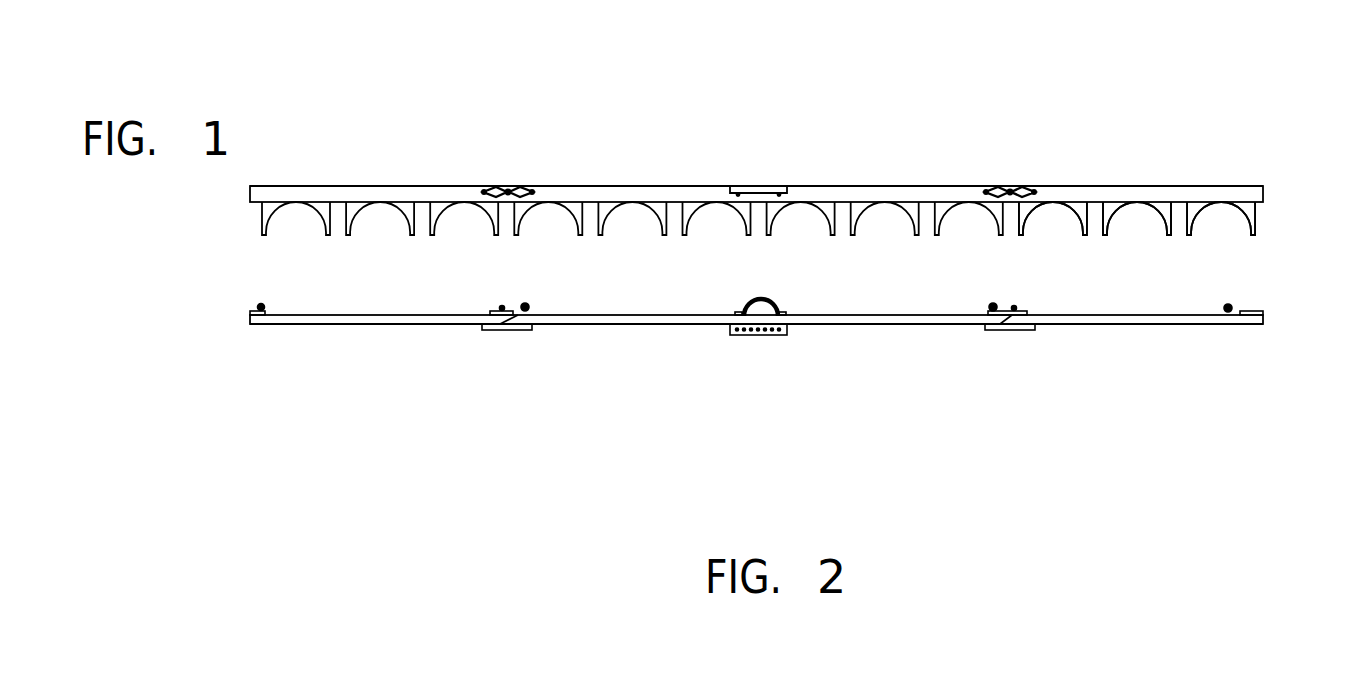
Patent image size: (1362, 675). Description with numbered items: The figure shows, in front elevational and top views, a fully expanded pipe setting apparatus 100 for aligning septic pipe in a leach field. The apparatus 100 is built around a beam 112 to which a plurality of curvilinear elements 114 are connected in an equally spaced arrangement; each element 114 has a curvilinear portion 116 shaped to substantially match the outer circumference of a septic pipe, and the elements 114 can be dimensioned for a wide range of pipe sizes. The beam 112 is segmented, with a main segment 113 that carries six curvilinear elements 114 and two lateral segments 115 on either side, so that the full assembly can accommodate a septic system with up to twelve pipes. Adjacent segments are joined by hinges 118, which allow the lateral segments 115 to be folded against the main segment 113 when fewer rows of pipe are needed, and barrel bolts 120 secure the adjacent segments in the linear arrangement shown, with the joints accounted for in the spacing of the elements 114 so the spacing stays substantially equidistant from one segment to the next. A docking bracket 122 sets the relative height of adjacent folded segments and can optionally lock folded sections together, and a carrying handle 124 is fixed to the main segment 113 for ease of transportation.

In FIG. 1, the pipe setting apparatus 100 is at (608, 145).
In FIG. 2, the pipe setting apparatus 100 is at (646, 354).
In FIG. 1, the beam 112 is at (366, 182).
In FIG. 2, the beam 112 is at (763, 360).
In FIG. 1, the main segment 113 is at (828, 183).
In FIG. 2, the main segment 113 is at (862, 325).
In FIG. 1, the curvilinear elements 114 is at (943, 205).
In FIG. 1, the lateral segments 115 is at (407, 186).
In FIG. 2, the lateral segments 115 is at (352, 325).
In FIG. 1, the curvilinear portion 116 is at (1233, 212).
In FIG. 1, the hinges 118 is at (518, 188).
In FIG. 2, the hinges 118 is at (520, 330).
In FIG. 2, the barrel bolts 120 is at (256, 310).
In FIG. 1, the docking bracket 122 is at (740, 187).
In FIG. 2, the docking bracket 122 is at (758, 335).
In FIG. 2, the carrying handle 124 is at (760, 302).